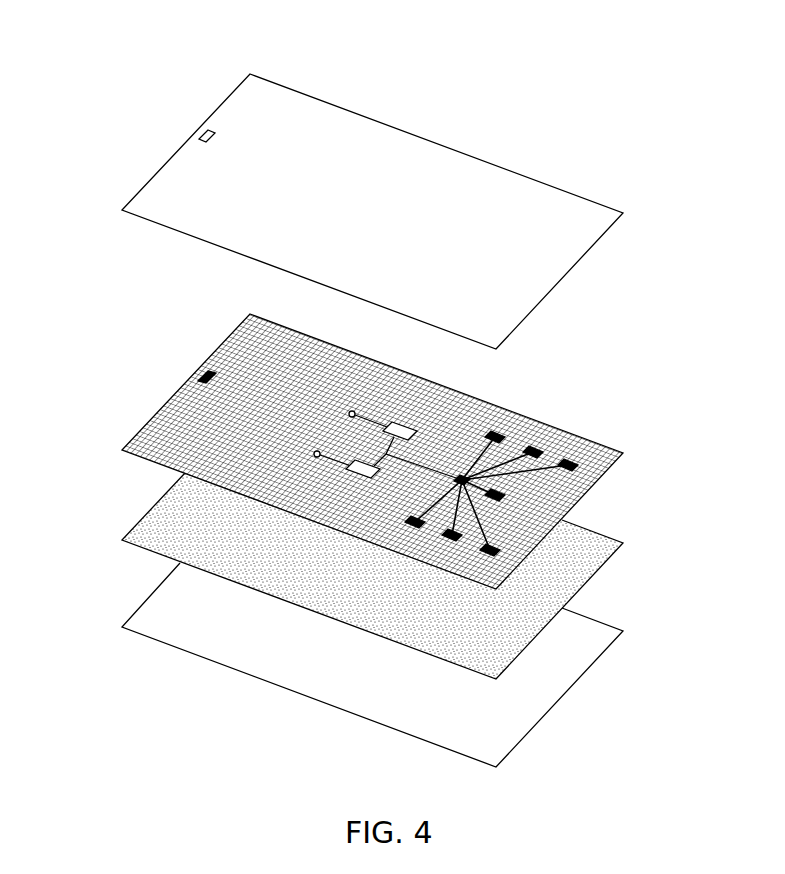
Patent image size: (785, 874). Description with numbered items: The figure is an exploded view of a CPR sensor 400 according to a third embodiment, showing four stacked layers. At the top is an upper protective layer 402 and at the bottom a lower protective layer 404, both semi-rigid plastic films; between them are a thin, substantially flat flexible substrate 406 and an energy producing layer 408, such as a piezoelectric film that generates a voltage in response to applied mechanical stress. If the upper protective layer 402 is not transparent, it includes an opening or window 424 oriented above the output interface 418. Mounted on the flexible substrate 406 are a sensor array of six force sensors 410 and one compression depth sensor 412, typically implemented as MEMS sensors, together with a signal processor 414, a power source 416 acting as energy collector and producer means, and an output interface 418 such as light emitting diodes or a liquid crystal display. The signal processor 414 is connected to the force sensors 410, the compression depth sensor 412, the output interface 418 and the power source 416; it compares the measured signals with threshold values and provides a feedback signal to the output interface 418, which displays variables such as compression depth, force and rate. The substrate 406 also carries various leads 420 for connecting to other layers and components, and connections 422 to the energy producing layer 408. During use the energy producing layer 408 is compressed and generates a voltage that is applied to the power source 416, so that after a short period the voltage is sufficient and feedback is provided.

The CPR sensor 400 is at (495, 62).
The upper protective layer 402 is at (545, 157).
The lower protective layer 404 is at (175, 655).
The flexible substrate 406 is at (219, 335).
The energy producing layer 408 is at (128, 553).
The force sensors 410 is at (592, 456).
The compression depth sensor 412 is at (522, 493).
The signal processor 414 is at (482, 461).
The power source 416 is at (334, 472).
The output interface 418 is at (199, 373).
The leads 420 is at (503, 537).
The connections 422 is at (300, 449).
The window 424 is at (200, 131).